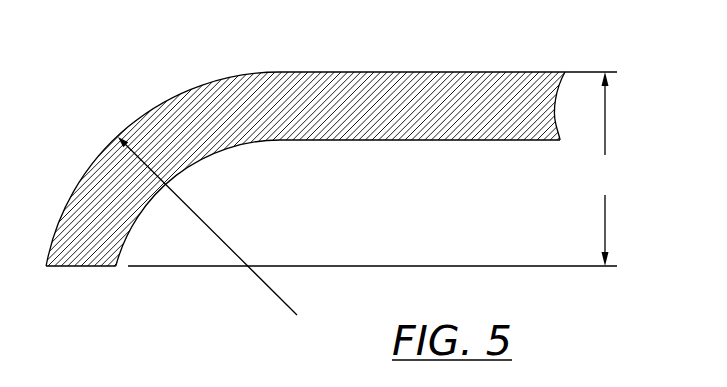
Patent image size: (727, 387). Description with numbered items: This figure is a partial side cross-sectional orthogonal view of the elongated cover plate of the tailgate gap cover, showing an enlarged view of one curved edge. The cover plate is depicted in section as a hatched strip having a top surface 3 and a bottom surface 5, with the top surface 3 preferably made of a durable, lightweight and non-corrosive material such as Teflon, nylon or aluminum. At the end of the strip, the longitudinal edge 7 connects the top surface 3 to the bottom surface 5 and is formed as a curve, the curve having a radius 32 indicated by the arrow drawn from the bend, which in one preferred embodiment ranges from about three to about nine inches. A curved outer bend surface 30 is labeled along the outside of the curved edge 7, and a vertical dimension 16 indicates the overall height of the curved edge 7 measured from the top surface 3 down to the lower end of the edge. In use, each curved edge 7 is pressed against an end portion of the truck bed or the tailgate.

The top surface 3 is at (425, 72).
The bottom surface 5 is at (424, 140).
The outer curved bend surface 30 is at (100, 158).
The longitudinal edge 7 is at (85, 266).
The radius 32 is at (188, 206).
The bend height dimension 16 is at (589, 188).